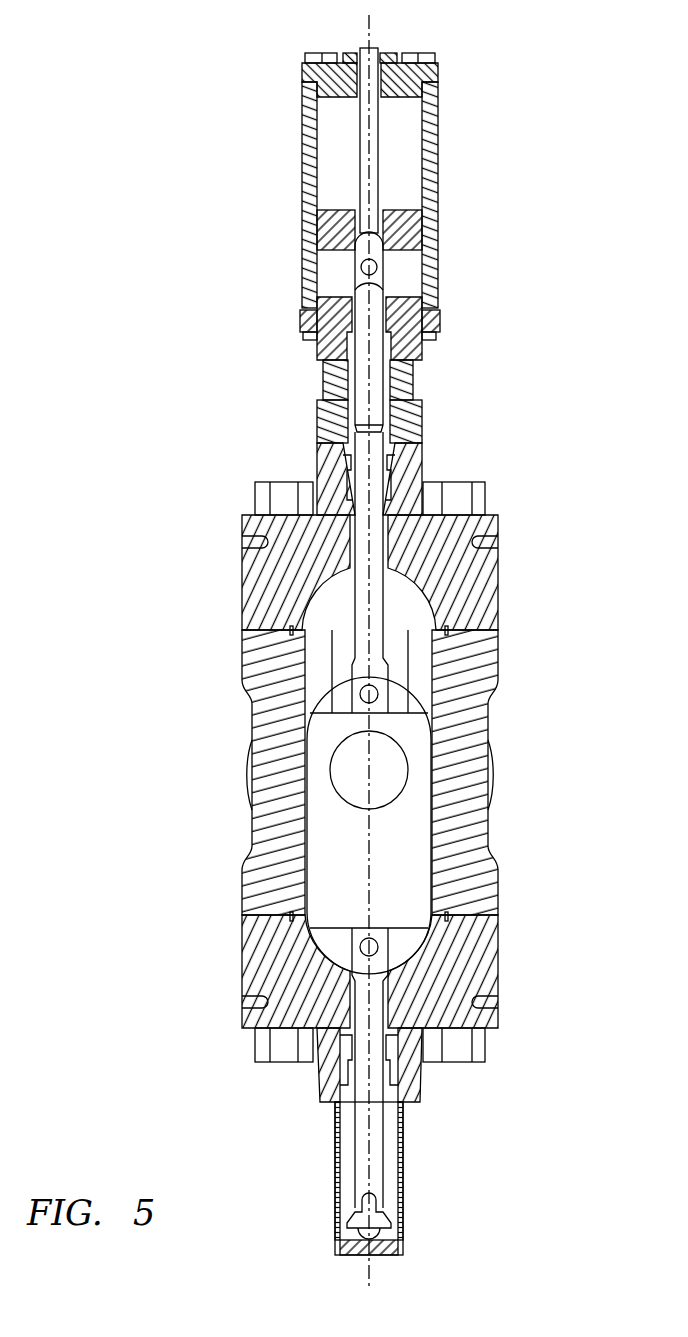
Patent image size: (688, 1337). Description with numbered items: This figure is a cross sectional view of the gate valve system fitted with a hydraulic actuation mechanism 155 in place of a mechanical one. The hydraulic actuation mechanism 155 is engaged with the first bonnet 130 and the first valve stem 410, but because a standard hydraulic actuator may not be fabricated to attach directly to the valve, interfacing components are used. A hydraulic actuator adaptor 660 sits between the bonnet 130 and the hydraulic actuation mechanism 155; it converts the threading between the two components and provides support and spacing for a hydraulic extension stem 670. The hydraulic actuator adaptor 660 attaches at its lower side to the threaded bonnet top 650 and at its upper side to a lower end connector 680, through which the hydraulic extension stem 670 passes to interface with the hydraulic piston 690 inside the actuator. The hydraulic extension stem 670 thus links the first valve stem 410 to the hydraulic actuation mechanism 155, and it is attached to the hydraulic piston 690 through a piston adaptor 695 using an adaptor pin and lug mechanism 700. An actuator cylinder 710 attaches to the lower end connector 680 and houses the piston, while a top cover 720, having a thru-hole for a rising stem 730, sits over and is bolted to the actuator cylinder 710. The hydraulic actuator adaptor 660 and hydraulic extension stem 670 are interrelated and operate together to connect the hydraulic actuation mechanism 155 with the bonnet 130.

The first bonnet 130 is at (487, 565).
The hydraulic actuation mechanism 155 is at (508, 60).
The first valve stem 410 is at (367, 552).
The threaded bonnet top 650 is at (323, 452).
The hydraulic actuator adaptor 660 is at (325, 410).
The hydraulic extension stem 670 is at (363, 373).
The lower end connector 680 is at (320, 353).
The hydraulic piston 690 is at (320, 223).
The piston adaptor 695 is at (352, 270).
The adaptor pin and lug mechanism 700 is at (380, 268).
The actuator cylinder 710 is at (302, 107).
The top cover 720 is at (323, 65).
The rising stem 730 is at (374, 48).